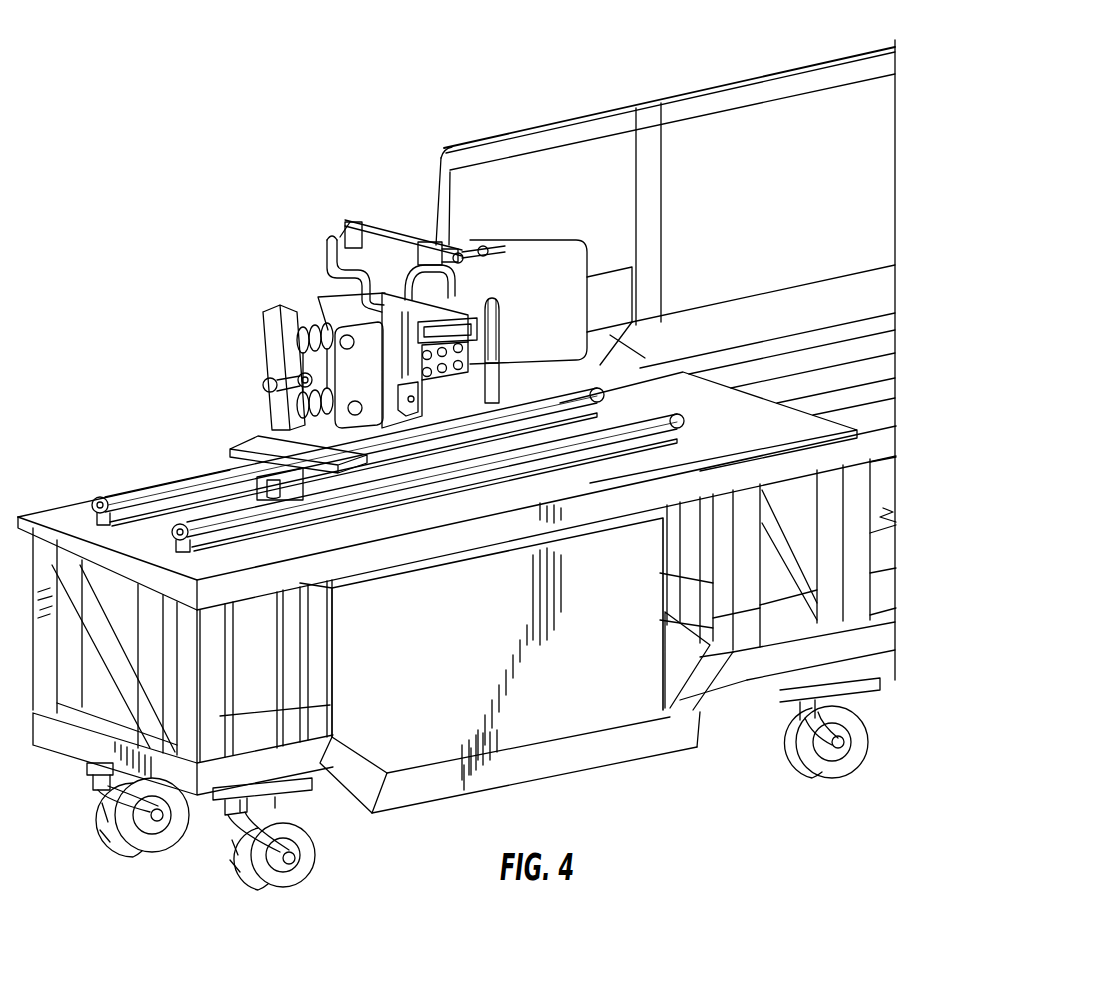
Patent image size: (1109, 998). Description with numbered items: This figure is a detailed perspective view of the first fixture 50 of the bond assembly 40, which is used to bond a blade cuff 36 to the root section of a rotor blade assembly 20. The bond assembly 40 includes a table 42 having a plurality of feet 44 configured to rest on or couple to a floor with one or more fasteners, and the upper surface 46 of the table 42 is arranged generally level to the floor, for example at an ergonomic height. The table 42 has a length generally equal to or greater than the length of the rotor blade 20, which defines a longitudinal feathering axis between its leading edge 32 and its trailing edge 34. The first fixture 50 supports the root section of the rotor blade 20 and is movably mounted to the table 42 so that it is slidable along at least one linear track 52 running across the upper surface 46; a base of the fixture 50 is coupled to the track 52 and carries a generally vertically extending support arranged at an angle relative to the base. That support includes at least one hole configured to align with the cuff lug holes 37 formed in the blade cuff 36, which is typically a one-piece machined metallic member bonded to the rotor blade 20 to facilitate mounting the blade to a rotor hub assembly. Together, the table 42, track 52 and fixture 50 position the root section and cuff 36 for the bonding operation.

The rotor blade assembly 20 is at (852, 127).
The leading edge 32 is at (858, 322).
The trailing edge 34 is at (693, 90).
The blade cuff 36 is at (373, 363).
The cuff lug holes 37 is at (300, 410).
The bond assembly 40 is at (147, 173).
The table 42 is at (750, 608).
The feet 44 is at (263, 850).
The upper surface 46 is at (777, 417).
The first fixture 50 is at (238, 292).
The linear track 52 is at (127, 495).